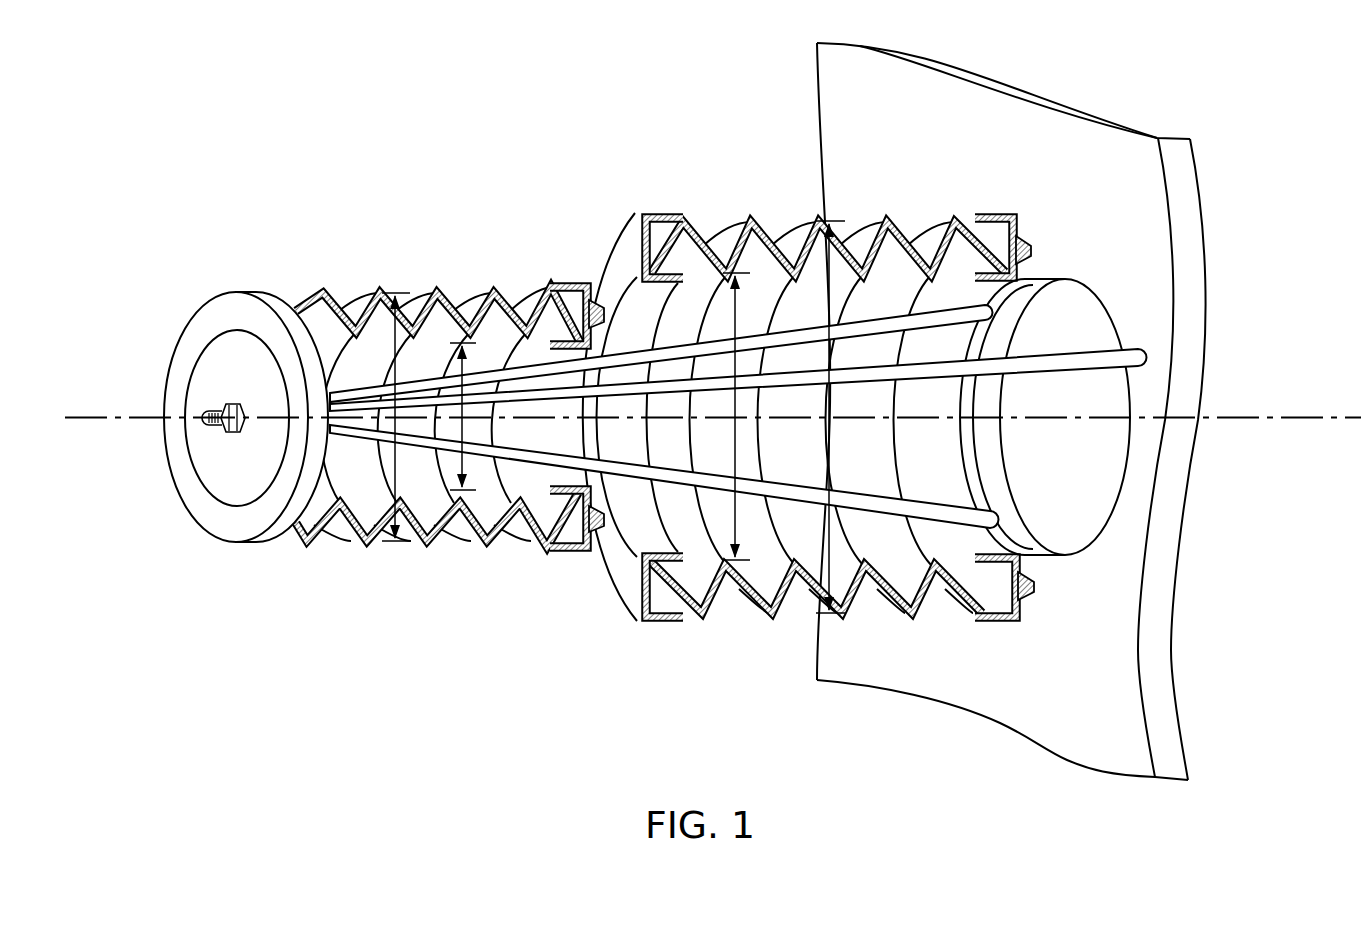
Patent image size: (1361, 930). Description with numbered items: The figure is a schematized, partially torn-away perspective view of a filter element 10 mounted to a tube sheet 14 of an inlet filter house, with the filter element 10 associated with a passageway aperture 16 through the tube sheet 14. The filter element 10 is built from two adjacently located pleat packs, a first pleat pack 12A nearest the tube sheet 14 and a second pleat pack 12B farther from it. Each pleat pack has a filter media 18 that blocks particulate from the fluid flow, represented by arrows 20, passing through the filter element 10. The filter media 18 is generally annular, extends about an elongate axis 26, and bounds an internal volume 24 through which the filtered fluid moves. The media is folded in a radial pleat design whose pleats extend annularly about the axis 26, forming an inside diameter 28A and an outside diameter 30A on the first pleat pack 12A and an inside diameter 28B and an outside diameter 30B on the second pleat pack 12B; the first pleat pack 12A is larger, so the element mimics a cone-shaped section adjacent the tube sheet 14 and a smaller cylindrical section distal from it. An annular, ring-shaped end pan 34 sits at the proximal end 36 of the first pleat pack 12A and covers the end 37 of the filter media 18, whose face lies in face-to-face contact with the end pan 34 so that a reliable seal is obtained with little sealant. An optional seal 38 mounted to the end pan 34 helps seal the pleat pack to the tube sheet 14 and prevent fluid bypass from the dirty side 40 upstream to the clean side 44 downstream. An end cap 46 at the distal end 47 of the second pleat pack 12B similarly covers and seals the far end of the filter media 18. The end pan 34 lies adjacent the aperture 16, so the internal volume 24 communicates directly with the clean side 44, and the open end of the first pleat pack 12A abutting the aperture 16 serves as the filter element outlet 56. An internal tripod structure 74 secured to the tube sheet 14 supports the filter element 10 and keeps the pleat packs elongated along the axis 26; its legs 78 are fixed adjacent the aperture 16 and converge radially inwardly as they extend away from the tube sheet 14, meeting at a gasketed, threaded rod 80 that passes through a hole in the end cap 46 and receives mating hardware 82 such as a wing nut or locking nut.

The filter element 10 is at (435, 132).
The first pleat pack 12A is at (866, 401).
The second pleat pack 12B is at (438, 402).
The tube sheet 14 is at (1200, 162).
The passageway aperture 16 is at (1089, 454).
The filter media 18 is at (404, 540).
The fluid flow arrows 20 is at (408, 257).
The internal volume 24 is at (640, 325).
The elongate axis 26 is at (100, 408).
The inside diameter of first pleat pack 28A is at (742, 328).
The inside diameter of second pleat pack 28B is at (460, 353).
The outside diameter of first pleat pack 30A is at (822, 425).
The outside diameter of second pleat pack 30B is at (392, 460).
The end pan 34 is at (995, 215).
The proximal end 36 is at (1025, 616).
The end of the filter media 37 is at (1003, 612).
The seal 38 is at (1028, 248).
The dirty side 40 is at (622, 59).
The clean side 44 is at (1049, 339).
The end cap 46 is at (231, 432).
The distal end 47 is at (258, 553).
The filter element outlet 56 is at (1039, 511).
The internal tripod structure 74 is at (428, 475).
The legs 78 is at (882, 312).
The threaded rod 80 is at (206, 433).
The mating hardware 82 is at (237, 433).